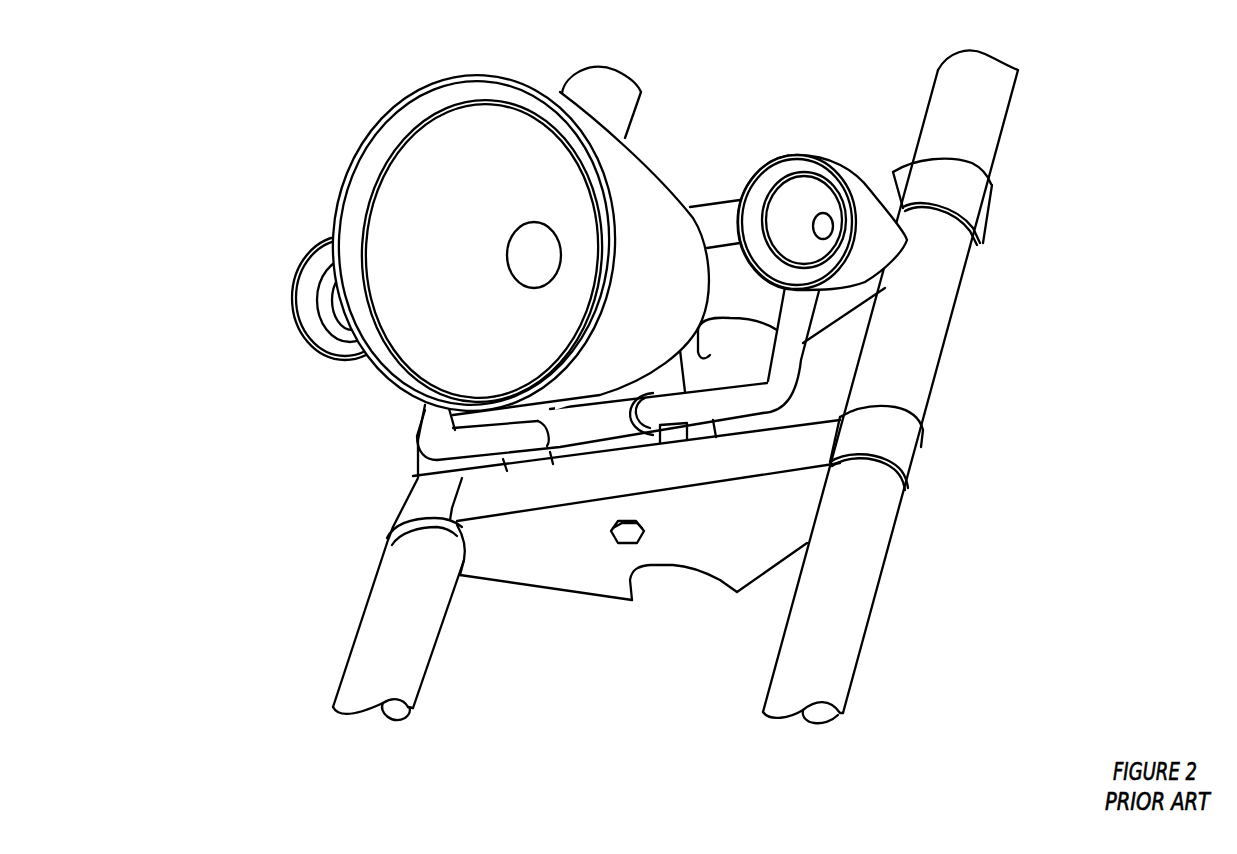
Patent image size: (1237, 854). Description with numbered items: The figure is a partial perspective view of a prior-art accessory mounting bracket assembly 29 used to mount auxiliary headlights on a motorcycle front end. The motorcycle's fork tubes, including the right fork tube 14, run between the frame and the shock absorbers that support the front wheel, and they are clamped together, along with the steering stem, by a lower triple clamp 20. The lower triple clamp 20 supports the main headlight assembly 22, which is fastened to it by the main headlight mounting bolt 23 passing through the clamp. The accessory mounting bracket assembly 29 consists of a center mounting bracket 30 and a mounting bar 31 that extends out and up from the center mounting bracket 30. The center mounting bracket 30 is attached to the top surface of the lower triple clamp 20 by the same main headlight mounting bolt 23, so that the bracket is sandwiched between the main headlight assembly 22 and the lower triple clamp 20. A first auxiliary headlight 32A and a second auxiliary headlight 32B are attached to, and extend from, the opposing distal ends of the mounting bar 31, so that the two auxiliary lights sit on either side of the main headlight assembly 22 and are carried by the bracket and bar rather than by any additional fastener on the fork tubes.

The right fork tube 14 is at (625, 107).
The lower triple clamp 20 is at (910, 418).
The main headlight assembly 22 is at (819, 413).
The main headlight mounting bolt 23 is at (613, 548).
The accessory mounting bracket assembly 29 is at (307, 413).
The center mounting bracket 30 is at (577, 428).
The mounting bar 31 is at (447, 436).
The first auxiliary headlight 32A is at (873, 250).
The second auxiliary headlight 32B is at (307, 256).